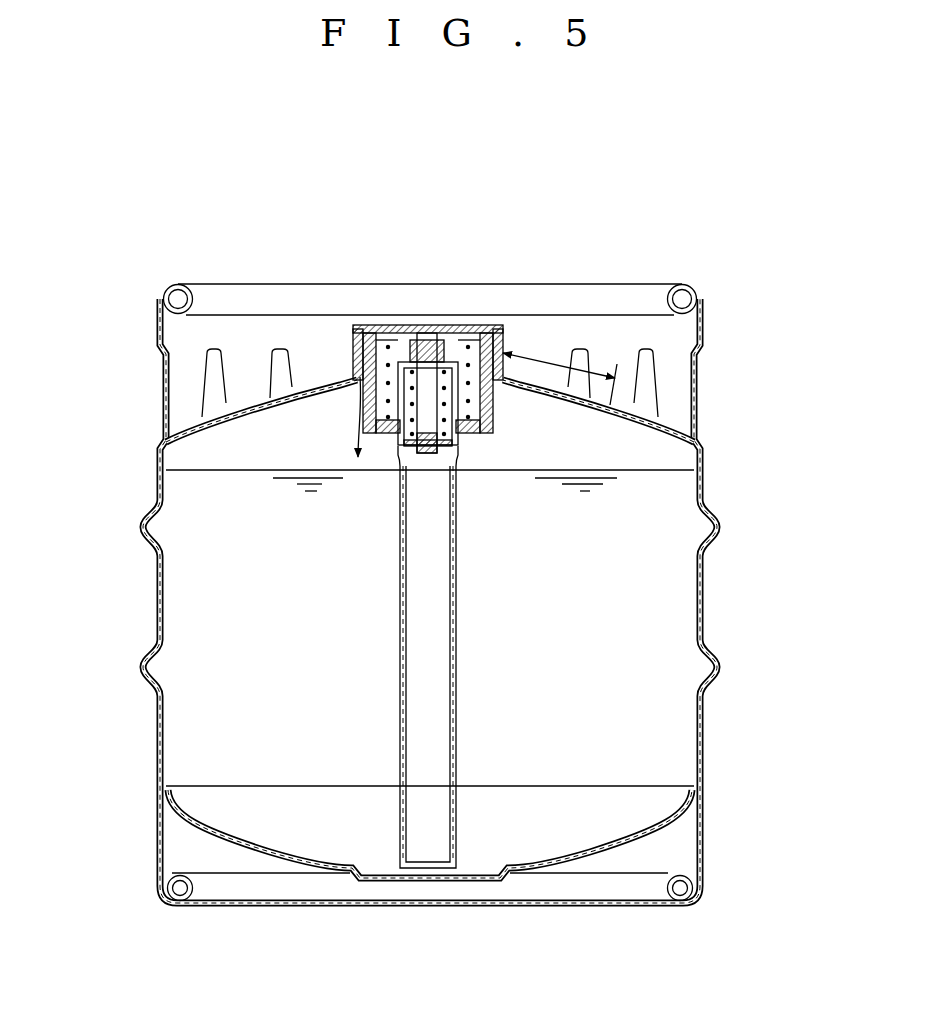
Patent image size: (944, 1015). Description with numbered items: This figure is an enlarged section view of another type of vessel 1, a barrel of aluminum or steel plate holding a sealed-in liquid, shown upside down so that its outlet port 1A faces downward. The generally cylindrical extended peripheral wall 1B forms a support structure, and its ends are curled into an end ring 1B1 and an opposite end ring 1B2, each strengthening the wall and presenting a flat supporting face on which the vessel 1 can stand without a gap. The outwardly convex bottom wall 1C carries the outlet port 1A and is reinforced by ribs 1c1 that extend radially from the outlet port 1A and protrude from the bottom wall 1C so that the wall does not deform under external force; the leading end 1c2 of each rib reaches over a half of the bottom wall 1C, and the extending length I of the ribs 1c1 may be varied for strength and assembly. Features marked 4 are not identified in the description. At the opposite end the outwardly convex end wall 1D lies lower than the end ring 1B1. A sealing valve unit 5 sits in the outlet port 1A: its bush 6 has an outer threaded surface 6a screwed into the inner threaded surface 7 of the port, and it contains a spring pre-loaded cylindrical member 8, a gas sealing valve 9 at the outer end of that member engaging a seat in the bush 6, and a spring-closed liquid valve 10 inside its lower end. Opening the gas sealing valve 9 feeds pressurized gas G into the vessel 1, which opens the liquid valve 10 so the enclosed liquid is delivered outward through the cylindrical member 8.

The vessel 1 is at (376, 591).
The outlet port 1A is at (355, 352).
The extended peripheral wall 1B is at (160, 390).
The end ring 1B1 is at (180, 903).
The end ring 1B2 is at (178, 284).
The bottom wall 1C is at (384, 343).
The rib 1c1 is at (552, 402).
The leading end of the rib 1c2 is at (607, 415).
The end wall 1D is at (260, 853).
The ribs 4 is at (234, 412).
The sealing valve unit 5 is at (396, 309).
The bush 6 is at (497, 335).
The outer threaded surface 6a is at (345, 340).
The inner threaded surface 7 is at (383, 333).
The cylindrical member 8 is at (452, 657).
The gas sealing valve 9 is at (458, 335).
The liquid valve 10 is at (438, 335).
The pressurized gas G is at (346, 421).
The extending length of the ribs I is at (548, 358).